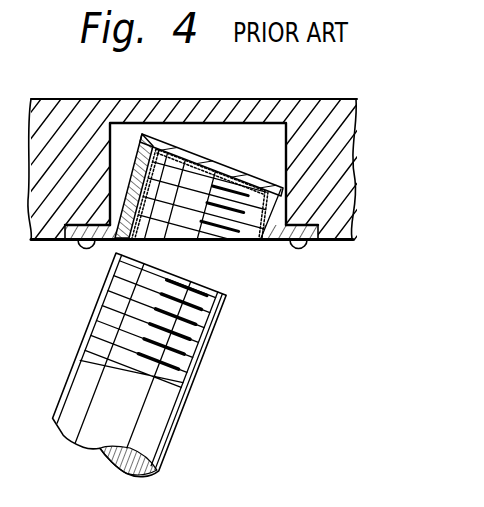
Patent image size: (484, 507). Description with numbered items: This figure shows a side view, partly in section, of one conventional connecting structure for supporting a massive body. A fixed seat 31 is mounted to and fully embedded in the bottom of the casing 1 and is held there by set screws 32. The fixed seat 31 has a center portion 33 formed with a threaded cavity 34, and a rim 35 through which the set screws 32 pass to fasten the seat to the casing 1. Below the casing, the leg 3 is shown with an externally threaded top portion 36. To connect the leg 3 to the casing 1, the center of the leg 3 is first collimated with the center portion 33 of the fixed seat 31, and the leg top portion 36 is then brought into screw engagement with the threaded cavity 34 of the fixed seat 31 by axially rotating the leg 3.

The casing 1 is at (312, 108).
The leg 3 is at (159, 377).
The fixed seat 31 is at (198, 139).
The set screws 32 is at (82, 247).
The center portion 33 is at (168, 142).
The threaded cavity 34 is at (254, 190).
The rim 35 is at (282, 241).
The externally threaded top portion 36 is at (212, 335).